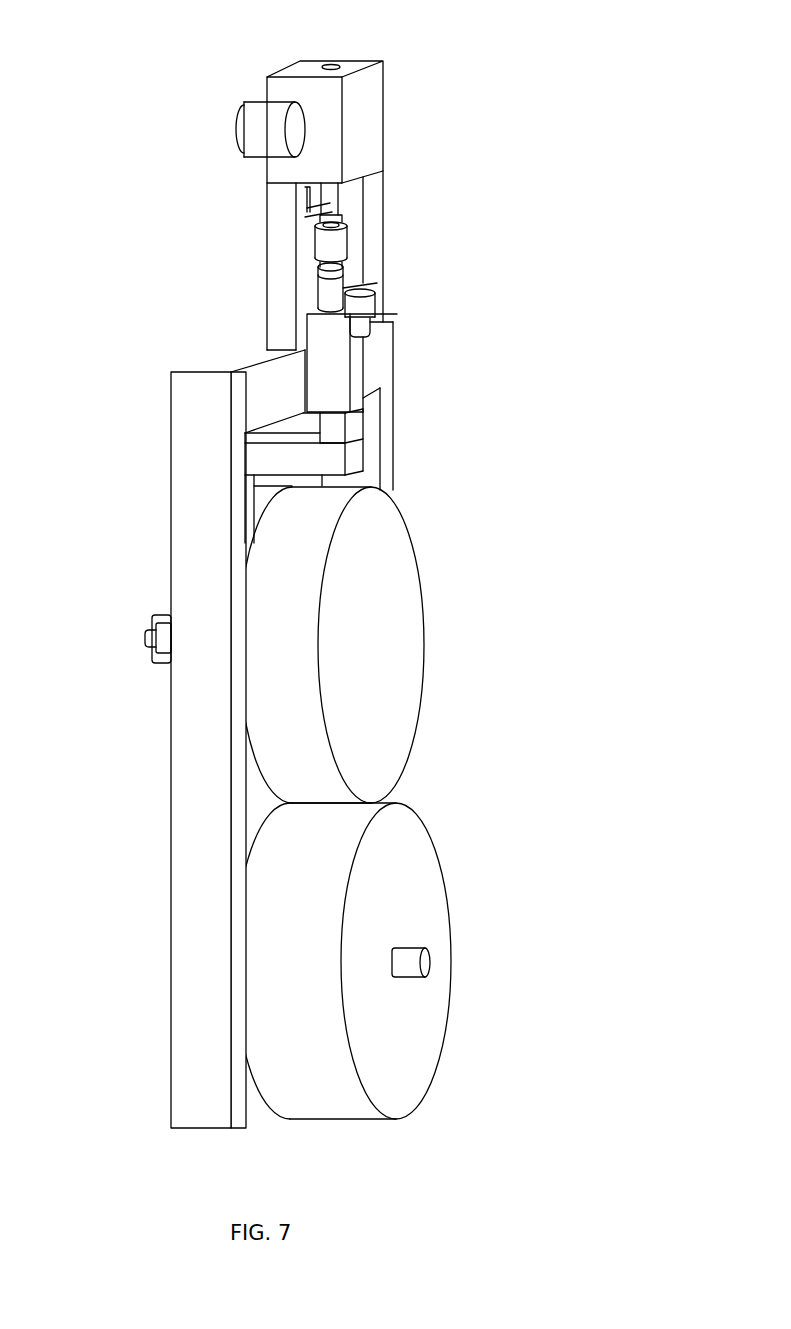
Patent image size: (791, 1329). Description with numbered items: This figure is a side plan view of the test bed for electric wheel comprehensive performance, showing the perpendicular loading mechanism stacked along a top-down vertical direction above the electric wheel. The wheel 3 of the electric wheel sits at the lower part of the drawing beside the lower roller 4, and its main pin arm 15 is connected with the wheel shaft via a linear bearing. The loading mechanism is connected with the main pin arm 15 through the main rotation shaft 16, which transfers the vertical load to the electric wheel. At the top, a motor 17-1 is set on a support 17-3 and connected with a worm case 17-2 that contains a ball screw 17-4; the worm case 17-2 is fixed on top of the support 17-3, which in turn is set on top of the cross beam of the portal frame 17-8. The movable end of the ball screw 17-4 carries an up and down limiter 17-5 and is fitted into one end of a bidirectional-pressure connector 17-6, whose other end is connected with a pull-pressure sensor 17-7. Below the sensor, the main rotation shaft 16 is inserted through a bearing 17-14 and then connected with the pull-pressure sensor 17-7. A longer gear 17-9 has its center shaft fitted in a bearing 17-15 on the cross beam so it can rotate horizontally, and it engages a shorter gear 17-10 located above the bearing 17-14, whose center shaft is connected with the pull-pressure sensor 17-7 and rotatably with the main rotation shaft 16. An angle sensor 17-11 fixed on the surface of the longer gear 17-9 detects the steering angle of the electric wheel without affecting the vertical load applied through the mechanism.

The wheel 3 is at (362, 647).
The lower roller 4 is at (397, 912).
The main pin arm 15 is at (285, 458).
The main rotation shaft 16 is at (333, 442).
The motor 17-1 is at (247, 128).
The worm case 17-2 is at (362, 98).
The support 17-3 is at (278, 310).
The ball screw 17-4 is at (335, 198).
The up and down limiter 17-5 is at (298, 222).
The bidirectional-pressure connector 17-6 is at (330, 245).
The pull-pressure sensor 17-7 is at (343, 273).
The portal frame 17-8 is at (192, 399).
The longer gear 17-9 is at (360, 308).
The shorter gear 17-10 is at (330, 308).
The angle sensor 17-11 is at (322, 273).
The bearing 17-14 is at (330, 367).
The bearing 17-15 is at (353, 326).